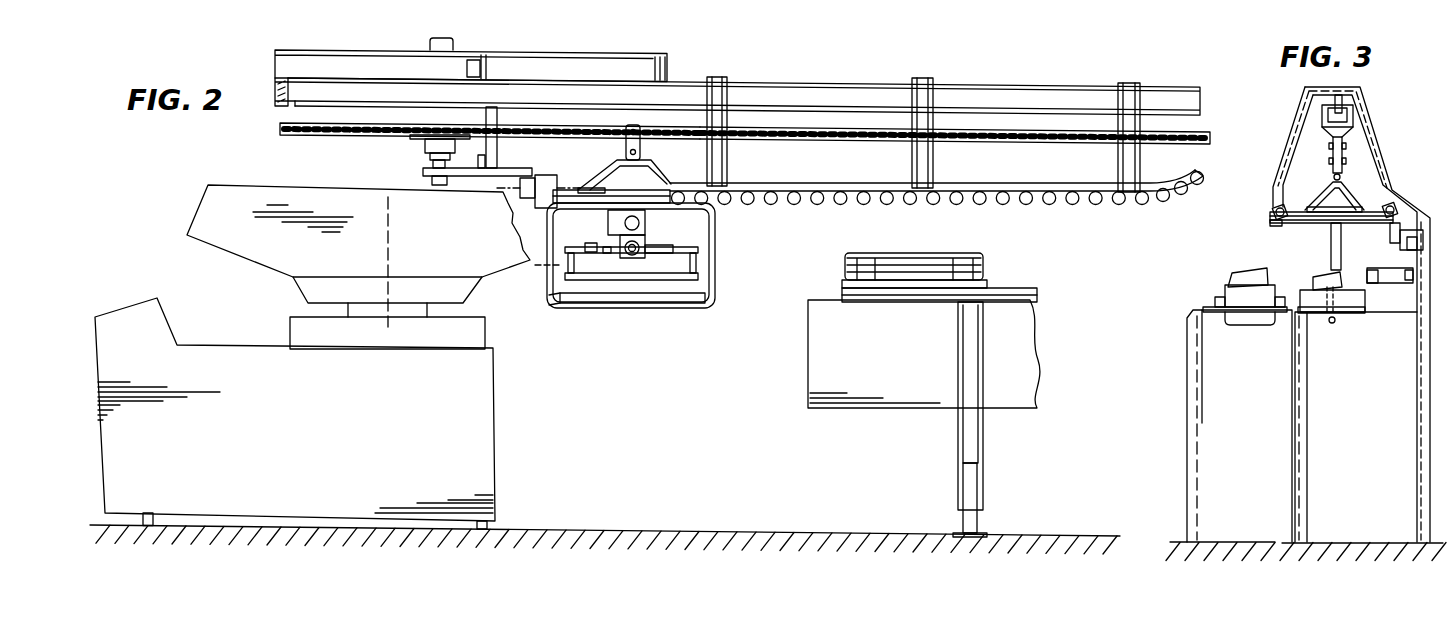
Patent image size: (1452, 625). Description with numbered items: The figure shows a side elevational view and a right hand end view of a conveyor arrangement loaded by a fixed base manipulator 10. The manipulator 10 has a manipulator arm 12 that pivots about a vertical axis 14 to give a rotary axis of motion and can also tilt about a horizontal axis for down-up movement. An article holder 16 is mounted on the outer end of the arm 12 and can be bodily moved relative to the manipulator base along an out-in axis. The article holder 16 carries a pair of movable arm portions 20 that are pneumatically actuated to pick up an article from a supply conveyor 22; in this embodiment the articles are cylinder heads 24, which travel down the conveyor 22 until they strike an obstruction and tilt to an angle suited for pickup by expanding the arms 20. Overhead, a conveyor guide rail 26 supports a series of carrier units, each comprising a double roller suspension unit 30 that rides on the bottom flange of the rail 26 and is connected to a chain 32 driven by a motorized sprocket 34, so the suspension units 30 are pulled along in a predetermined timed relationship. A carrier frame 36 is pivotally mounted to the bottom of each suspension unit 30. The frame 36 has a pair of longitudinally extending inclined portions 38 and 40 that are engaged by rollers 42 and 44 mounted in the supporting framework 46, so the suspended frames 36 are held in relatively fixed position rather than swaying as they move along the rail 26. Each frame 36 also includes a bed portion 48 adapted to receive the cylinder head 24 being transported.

In FIG. 2, the fixed base manipulator 10 is at (498, 449).
In FIG. 2, the manipulator arm 12 is at (497, 261).
In FIG. 2, the vertical axis 14 is at (388, 241).
In FIG. 2, the article holder 16 is at (630, 258).
In FIG. 2, the movable arm portions 20 is at (657, 247).
In FIG. 2, the supply conveyor 22 is at (1013, 293).
In FIG. 3, the supply conveyor 22 is at (1240, 315).
In FIG. 2, the cylinder heads 24 is at (683, 252).
In FIG. 3, the cylinder heads 24 is at (1265, 267).
In FIG. 2, the conveyor guide rail 26 is at (823, 87).
In FIG. 3, the conveyor guide rail 26 is at (1342, 97).
In FIG. 2, the double roller suspension unit 30 is at (641, 145).
In FIG. 3, the double roller suspension unit 30 is at (1348, 135).
In FIG. 2, the chain 32 is at (863, 145).
In FIG. 2, the motorized sprocket 34 is at (367, 136).
In FIG. 2, the carrier frame 36 is at (650, 255).
In FIG. 3, the carrier frame 36 is at (1332, 243).
In FIG. 2, the inclined portion 38 is at (583, 204).
In FIG. 3, the inclined portion 38 is at (1280, 224).
In FIG. 3, the inclined portion 40 is at (1392, 224).
In FIG. 2, the roller 42 is at (792, 205).
In FIG. 3, the roller 42 is at (1272, 208).
In FIG. 3, the roller 44 is at (1402, 207).
In FIG. 2, the supporting framework 46 is at (716, 76).
In FIG. 3, the supporting framework 46 is at (1385, 178).
In FIG. 2, the bed portion 48 is at (657, 303).
In FIG. 3, the bed portion 48 is at (1350, 316).